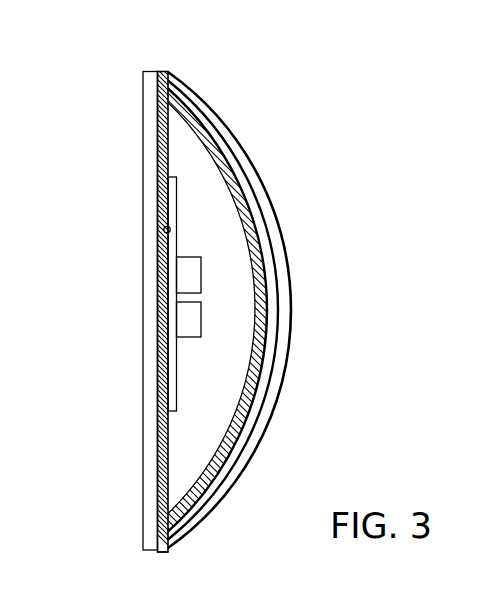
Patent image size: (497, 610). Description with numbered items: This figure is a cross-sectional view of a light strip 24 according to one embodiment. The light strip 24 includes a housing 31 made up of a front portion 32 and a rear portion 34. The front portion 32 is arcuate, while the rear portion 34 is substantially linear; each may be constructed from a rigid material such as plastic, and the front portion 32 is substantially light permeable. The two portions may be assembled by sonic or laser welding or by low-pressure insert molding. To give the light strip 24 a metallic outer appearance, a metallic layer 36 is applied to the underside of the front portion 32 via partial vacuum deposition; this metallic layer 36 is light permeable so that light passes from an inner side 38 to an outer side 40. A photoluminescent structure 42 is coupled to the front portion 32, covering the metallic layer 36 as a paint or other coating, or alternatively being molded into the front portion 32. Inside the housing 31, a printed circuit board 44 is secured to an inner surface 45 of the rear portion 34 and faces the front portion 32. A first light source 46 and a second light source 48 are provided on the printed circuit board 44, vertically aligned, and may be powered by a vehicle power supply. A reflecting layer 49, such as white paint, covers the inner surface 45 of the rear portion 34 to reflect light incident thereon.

The light strip 24 is at (351, 84).
The housing 31 is at (117, 56).
The front portion 32 is at (249, 152).
The rear portion 34 is at (147, 170).
The metallic layer 36 is at (267, 270).
The inner side 38 is at (252, 422).
The outer side 40 is at (255, 200).
The photoluminescent structure 42 is at (219, 145).
The printed circuit board 44 is at (172, 385).
The inner surface 45 is at (163, 228).
The first light source 46 is at (187, 272).
The second light source 48 is at (187, 322).
The reflecting layer 49 is at (163, 552).